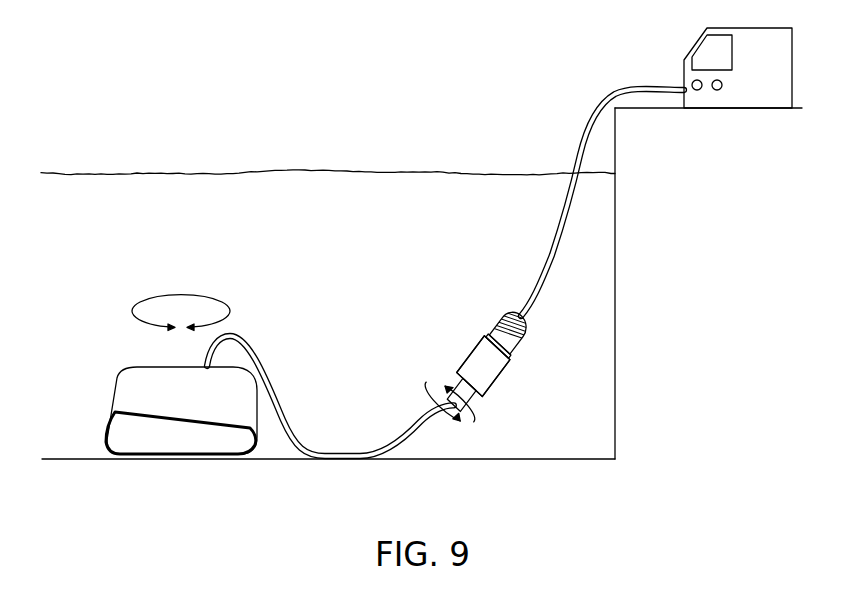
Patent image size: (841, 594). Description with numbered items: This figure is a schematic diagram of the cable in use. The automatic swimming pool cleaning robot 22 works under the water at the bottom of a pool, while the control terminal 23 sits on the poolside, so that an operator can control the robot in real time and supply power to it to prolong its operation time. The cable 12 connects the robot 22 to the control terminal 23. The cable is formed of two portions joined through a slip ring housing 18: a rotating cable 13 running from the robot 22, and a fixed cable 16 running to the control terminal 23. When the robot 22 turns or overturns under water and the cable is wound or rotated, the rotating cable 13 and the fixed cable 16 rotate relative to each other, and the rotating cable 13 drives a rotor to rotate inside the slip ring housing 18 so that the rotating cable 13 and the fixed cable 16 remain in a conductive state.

The cable 12 is at (478, 342).
The rotating cable 13 is at (408, 438).
The fixed cable 16 is at (568, 229).
The slip ring housing 18 is at (483, 370).
The automatic swimming pool cleaning robot 22 is at (172, 397).
The control terminal 23 is at (705, 59).